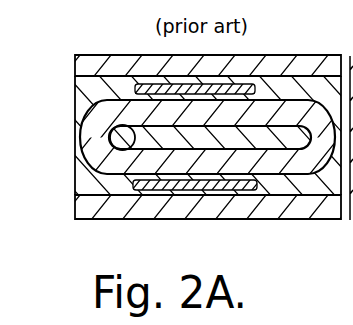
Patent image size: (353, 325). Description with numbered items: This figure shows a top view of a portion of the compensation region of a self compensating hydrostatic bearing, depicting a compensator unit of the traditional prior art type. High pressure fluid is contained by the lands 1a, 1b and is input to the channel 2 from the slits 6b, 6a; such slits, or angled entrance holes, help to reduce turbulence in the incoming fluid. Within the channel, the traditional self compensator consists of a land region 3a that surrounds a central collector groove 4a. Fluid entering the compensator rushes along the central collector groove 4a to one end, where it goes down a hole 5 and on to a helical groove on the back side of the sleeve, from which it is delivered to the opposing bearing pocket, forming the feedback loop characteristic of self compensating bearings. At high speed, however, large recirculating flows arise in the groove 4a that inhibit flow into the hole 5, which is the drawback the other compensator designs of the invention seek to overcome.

The land 1a is at (84, 68).
The land 1b is at (82, 205).
The channel 2 is at (96, 93).
The land region 3a is at (178, 156).
The central collector groove 4a is at (240, 149).
The hole 5 is at (117, 149).
The slit 6a is at (256, 188).
The slit 6b is at (237, 82).